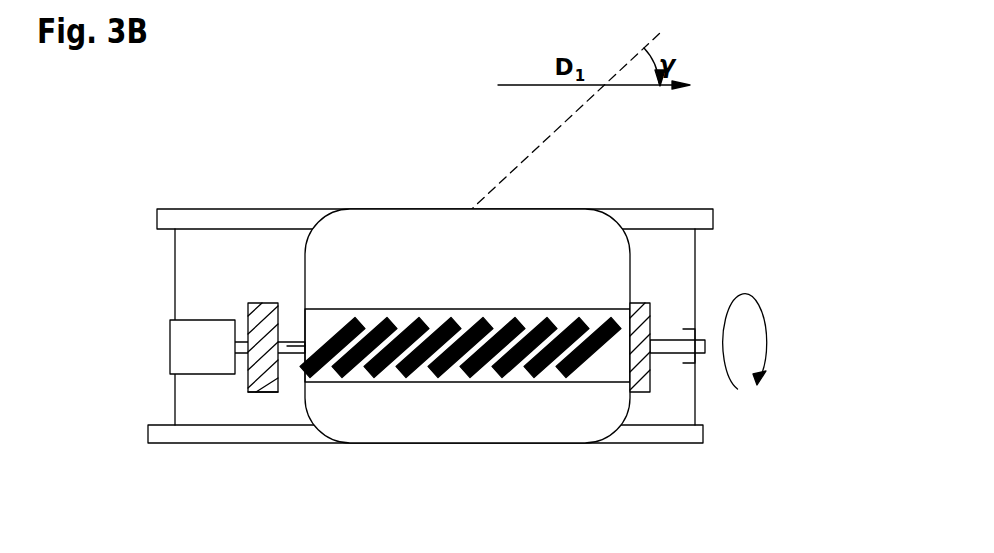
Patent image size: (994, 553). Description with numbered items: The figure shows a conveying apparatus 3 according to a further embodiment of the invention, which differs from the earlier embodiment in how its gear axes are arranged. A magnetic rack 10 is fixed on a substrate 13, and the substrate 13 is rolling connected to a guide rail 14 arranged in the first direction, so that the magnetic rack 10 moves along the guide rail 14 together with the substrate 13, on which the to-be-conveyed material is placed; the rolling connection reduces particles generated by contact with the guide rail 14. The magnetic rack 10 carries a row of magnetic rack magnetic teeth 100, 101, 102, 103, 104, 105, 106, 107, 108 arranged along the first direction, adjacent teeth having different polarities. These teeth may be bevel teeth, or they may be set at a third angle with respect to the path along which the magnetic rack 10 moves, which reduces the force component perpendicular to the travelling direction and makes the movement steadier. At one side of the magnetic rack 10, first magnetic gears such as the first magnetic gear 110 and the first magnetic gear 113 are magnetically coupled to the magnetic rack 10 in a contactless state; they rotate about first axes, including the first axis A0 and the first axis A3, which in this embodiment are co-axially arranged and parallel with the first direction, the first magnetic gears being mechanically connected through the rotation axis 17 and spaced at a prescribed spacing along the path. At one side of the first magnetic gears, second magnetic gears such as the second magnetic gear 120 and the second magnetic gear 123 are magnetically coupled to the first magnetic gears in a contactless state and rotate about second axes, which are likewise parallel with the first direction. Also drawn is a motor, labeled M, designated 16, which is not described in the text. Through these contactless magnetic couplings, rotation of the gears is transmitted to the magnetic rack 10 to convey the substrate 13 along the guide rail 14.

The conveying apparatus 3 is at (752, 72).
The magnetic rack 10 is at (613, 365).
The substrate 13 is at (390, 250).
The guide rail 14 is at (697, 220).
The motor 16 is at (182, 348).
The rotation axis 17 is at (700, 340).
The first magnetic gear 110 is at (250, 310).
The first magnetic gear 113 is at (645, 303).
The second magnetic gear 120 is at (270, 393).
The second magnetic gear 123 is at (646, 395).
The magnetic rack magnetic tooth 100 is at (325, 376).
The magnetic rack magnetic tooth 101 is at (357, 376).
The magnetic rack magnetic tooth 102 is at (390, 376).
The magnetic rack magnetic tooth 103 is at (421, 376).
The magnetic rack magnetic tooth 104 is at (455, 376).
The magnetic rack magnetic tooth 105 is at (488, 376).
The magnetic rack magnetic tooth 106 is at (521, 376).
The magnetic rack magnetic tooth 107 is at (555, 376).
The magnetic rack magnetic tooth 108 is at (595, 362).
The first axis A0 is at (292, 354).
The first axis A3 is at (652, 347).